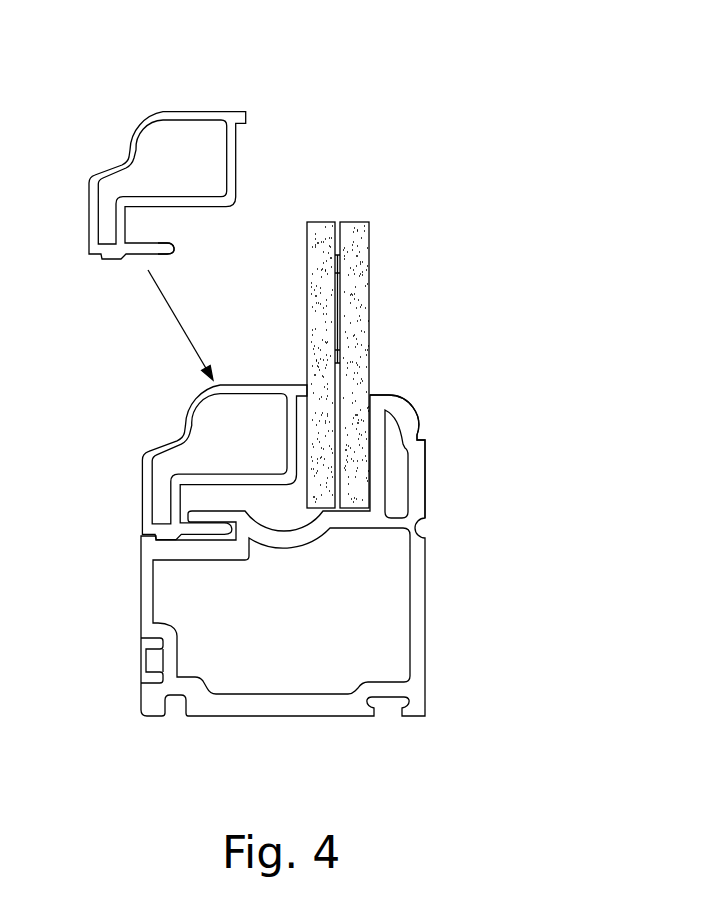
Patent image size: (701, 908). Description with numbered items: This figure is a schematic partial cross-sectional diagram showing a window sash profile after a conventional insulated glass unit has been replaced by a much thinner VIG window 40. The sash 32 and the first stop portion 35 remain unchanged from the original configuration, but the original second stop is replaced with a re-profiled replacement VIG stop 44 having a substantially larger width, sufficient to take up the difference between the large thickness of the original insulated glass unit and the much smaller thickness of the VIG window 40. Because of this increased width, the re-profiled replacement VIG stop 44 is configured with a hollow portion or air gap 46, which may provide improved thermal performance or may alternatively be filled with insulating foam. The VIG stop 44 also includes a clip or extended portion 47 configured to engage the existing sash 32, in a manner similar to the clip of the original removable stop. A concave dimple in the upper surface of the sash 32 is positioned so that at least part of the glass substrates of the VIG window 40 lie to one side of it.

The sash 32 is at (264, 561).
The first stop portion 35 is at (426, 483).
The VIG window 40 is at (366, 293).
The re-profiled replacement VIG stop 44 is at (220, 285).
The air gap 46 is at (210, 156).
The clip or extended portion 47 is at (174, 244).